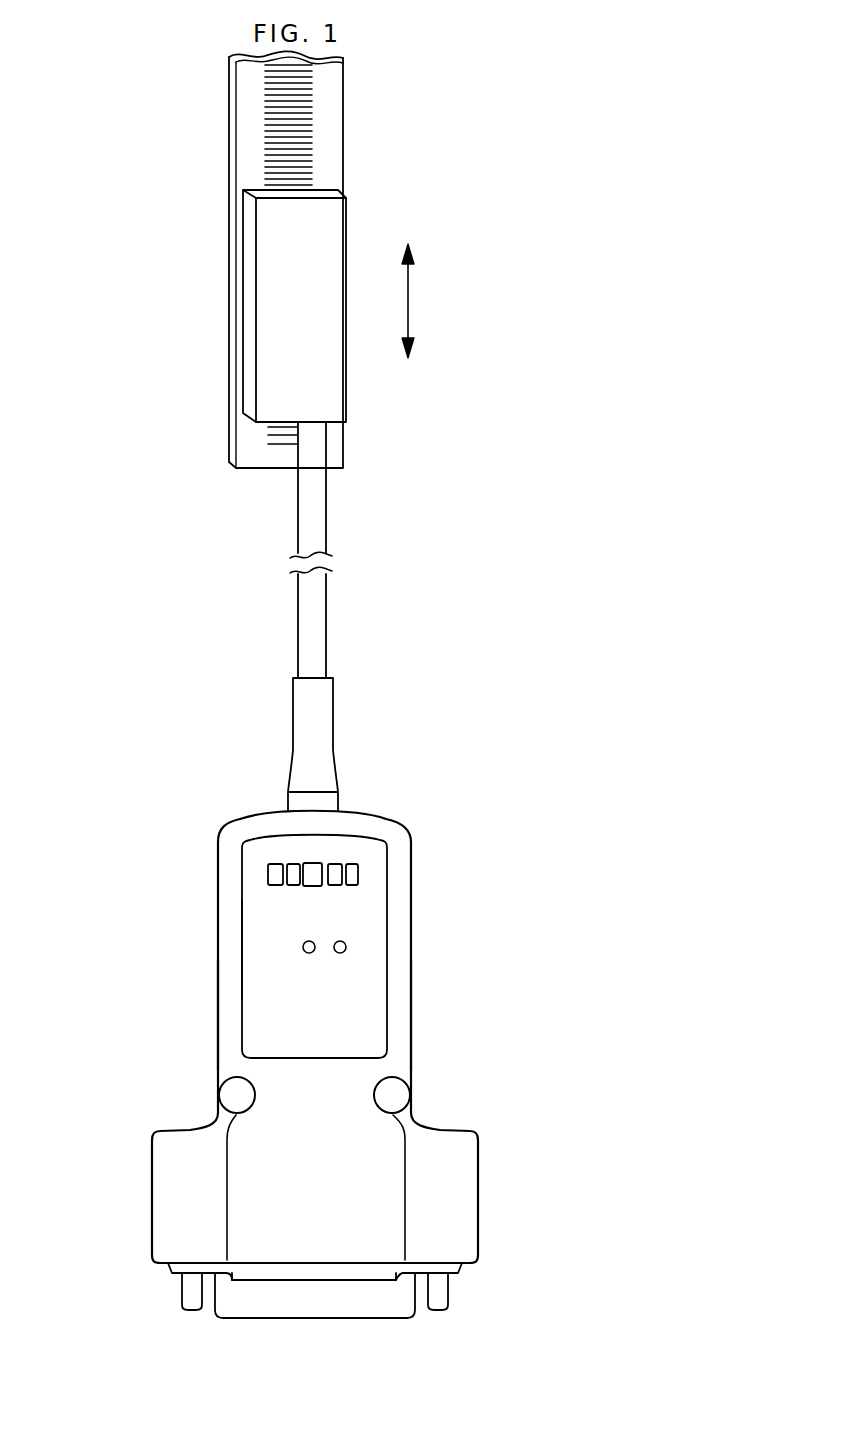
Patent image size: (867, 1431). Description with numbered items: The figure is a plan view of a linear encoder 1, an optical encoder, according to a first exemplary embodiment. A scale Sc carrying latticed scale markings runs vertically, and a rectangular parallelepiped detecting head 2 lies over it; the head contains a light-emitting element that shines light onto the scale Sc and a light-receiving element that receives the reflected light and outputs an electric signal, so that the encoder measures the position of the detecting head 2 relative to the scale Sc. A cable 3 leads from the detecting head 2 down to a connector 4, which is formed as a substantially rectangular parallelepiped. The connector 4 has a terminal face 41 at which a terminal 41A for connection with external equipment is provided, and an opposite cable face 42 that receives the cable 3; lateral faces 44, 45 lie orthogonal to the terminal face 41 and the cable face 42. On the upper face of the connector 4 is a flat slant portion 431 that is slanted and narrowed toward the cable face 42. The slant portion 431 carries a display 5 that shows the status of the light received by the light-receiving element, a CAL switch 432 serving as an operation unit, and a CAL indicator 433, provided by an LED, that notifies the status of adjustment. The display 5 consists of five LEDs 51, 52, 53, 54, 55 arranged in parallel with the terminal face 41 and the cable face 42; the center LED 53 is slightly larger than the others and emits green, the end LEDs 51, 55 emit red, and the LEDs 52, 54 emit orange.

The linear encoder 1 is at (500, 486).
The scale Sc is at (328, 132).
The detecting head 2 is at (337, 287).
The cable 3 is at (320, 610).
The connector 4 is at (430, 977).
The terminal face 41 is at (465, 1270).
The terminal 41A is at (360, 1313).
The cable face 42 is at (375, 817).
The slant portion 431 is at (388, 1067).
The CAL switch 432 is at (302, 947).
The CAL indicator 433 is at (348, 947).
The lateral face 44 is at (411, 1013).
The lateral face 45 is at (218, 1022).
The display 5 is at (137, 840).
The LED 51 is at (360, 870).
The LED 52 is at (360, 879).
The center LED 53 is at (306, 878).
The LED 54 is at (288, 878).
The LED 55 is at (266, 869).